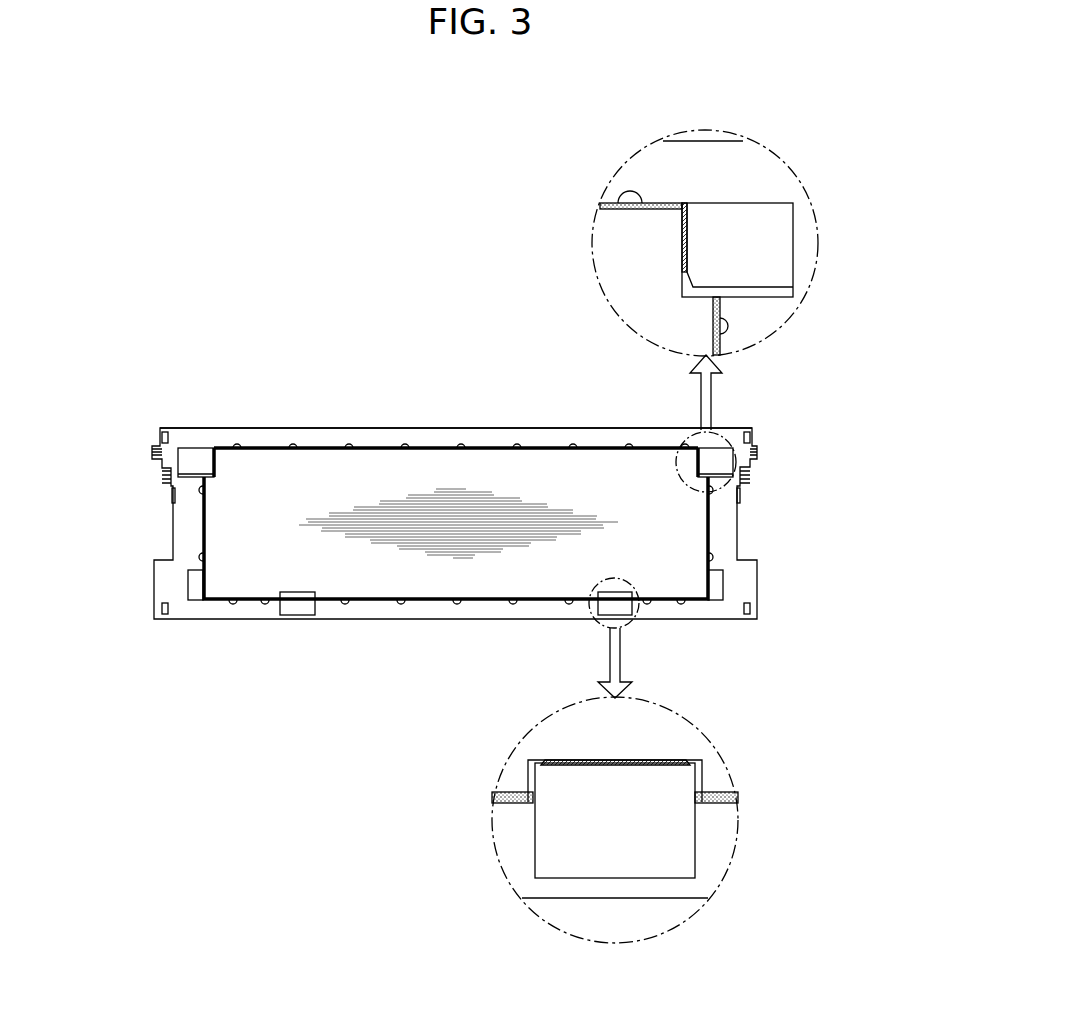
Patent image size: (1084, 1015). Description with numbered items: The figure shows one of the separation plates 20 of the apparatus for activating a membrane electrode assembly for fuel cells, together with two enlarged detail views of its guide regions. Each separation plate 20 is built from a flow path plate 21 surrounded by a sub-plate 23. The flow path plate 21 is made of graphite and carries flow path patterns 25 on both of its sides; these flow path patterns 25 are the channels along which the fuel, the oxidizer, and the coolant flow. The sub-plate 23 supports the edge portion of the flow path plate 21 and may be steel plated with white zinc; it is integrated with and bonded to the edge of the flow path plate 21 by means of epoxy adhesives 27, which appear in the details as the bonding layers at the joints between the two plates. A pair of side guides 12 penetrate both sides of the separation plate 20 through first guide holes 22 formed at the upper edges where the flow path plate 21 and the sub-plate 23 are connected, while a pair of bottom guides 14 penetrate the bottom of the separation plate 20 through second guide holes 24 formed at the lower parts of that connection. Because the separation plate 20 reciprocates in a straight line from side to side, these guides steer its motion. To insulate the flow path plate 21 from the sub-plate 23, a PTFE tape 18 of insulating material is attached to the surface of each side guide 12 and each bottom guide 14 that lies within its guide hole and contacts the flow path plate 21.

The separation plate 20 is at (472, 128).
The side guide 12 is at (185, 462).
The bottom guide 14 is at (296, 605).
The PTFE tape 18 is at (683, 247).
The flow path plate 21 is at (313, 462).
The first guide hole 22 is at (173, 493).
The sub-plate 23 is at (430, 435).
The second guide hole 24 is at (285, 590).
The flow path pattern 25 is at (466, 523).
The epoxy adhesive 27 is at (603, 206).